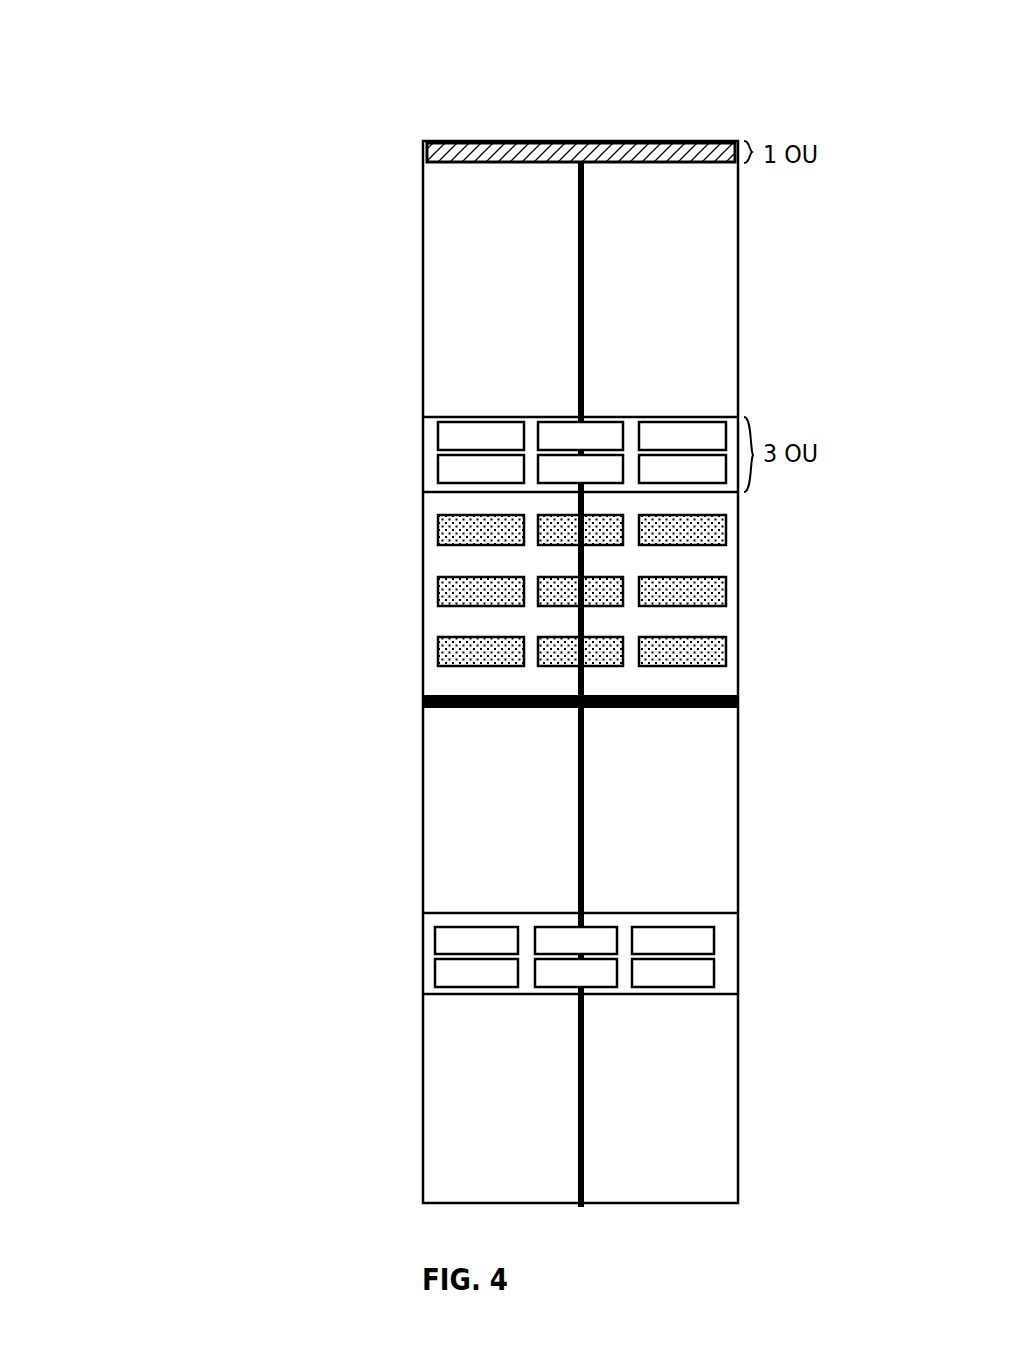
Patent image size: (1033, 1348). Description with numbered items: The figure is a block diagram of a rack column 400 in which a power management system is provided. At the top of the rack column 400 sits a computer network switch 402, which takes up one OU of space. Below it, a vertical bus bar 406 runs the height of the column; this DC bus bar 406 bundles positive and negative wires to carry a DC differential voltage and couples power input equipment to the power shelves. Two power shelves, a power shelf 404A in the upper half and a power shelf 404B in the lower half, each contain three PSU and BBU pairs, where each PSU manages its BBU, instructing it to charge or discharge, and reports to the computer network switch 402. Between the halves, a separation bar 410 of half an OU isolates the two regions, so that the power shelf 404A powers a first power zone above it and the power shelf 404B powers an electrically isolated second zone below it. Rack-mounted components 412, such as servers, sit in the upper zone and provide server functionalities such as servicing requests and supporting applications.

The rack column 400 is at (713, 42).
The computer network switch 402 is at (421, 150).
The power shelf 404A is at (422, 462).
The power shelf 404B is at (422, 925).
The bus bar 406 is at (577, 257).
The separation bar 410 is at (422, 700).
The rack-mounted components 412 is at (438, 532).